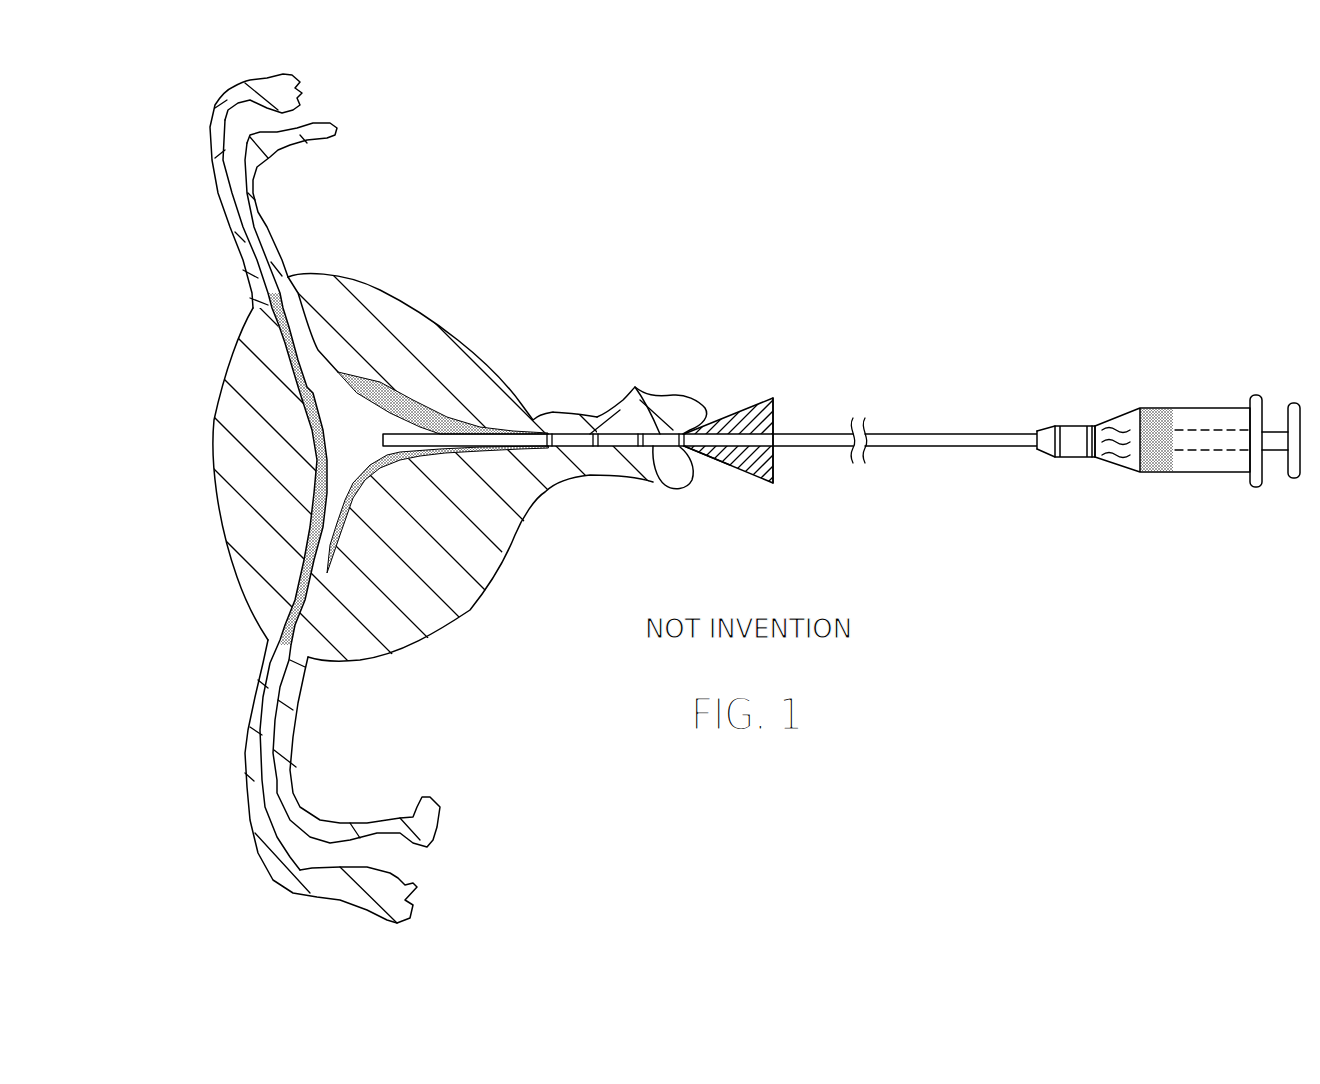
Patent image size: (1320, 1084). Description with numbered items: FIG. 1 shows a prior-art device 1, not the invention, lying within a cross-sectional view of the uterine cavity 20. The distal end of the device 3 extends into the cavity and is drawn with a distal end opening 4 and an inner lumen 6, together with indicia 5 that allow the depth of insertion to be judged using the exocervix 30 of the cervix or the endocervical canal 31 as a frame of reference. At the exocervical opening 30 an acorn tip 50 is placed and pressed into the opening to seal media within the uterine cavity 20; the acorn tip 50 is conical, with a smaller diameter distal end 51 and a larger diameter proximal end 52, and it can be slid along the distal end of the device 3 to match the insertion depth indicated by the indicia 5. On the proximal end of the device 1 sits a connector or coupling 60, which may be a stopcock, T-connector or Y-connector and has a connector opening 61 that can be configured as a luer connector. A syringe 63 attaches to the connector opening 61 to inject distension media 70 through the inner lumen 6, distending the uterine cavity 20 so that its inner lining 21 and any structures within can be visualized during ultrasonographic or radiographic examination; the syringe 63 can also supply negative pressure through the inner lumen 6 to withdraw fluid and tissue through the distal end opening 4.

The device 1 is at (928, 438).
The distal end of the device 3 is at (442, 440).
The distal end opening 4 is at (383, 440).
The indicia 5 is at (635, 390).
The inner lumen 6 is at (1060, 432).
The uterine cavity 20 is at (342, 415).
The inner lining 21 is at (352, 518).
The exocervix 30 is at (699, 456).
The endocervical canal 31 is at (534, 428).
The acorn tip 50 is at (775, 407).
The smaller diameter distal end 51 is at (665, 483).
The larger diameter proximal end 52 is at (774, 490).
The connector or coupling 60 is at (1052, 456).
The connector opening 61 is at (1093, 427).
The syringe 63 is at (1200, 385).
The distension media 70 is at (1119, 460).